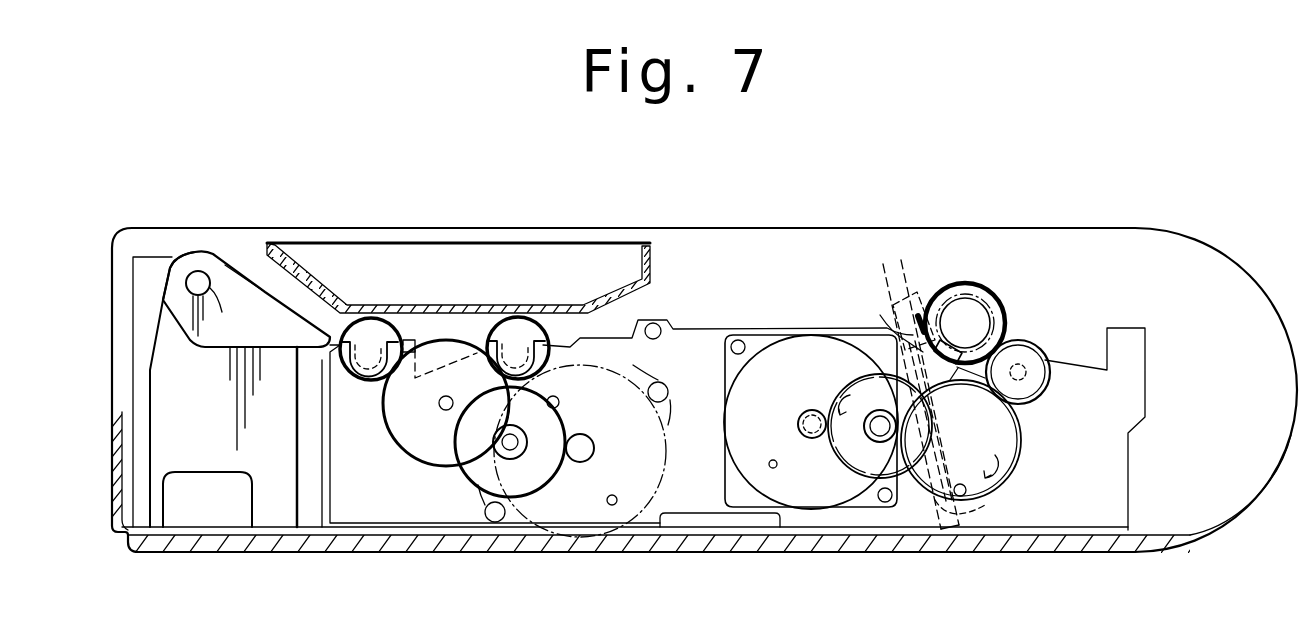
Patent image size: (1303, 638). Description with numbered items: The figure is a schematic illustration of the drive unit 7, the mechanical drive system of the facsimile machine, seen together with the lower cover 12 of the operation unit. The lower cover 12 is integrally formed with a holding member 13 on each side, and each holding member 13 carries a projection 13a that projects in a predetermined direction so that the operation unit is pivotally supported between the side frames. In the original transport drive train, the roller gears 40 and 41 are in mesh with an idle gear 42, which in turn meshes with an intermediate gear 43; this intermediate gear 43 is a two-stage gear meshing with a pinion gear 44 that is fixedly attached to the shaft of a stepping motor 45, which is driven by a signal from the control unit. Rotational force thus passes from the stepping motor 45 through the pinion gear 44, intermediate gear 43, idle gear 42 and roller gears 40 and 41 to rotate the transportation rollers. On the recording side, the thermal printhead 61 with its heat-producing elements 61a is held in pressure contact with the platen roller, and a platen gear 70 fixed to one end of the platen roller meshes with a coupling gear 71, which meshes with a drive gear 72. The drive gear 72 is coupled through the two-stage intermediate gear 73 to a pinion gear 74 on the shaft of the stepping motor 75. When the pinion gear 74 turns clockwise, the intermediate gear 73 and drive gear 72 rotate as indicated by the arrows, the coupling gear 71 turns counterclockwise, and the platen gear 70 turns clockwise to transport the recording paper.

The drive unit 7 is at (703, 556).
The lower cover 12 is at (648, 252).
The holding member 13 is at (187, 336).
The projection 13a is at (246, 299).
The roller gear 40 is at (520, 336).
The roller gear 41 is at (372, 336).
The idle gear 42 is at (443, 353).
The intermediate gear 43 is at (478, 470).
The pinion gear 44 is at (598, 448).
The stepping motor 45 is at (656, 477).
The thermal printhead 61 is at (905, 292).
The heat-producing element 61a is at (918, 327).
The platen gear 70 is at (960, 300).
The coupling gear 71 is at (1025, 350).
The drive gear 72 is at (913, 487).
The intermediate gear 73 is at (857, 453).
The pinion gear 74 is at (809, 412).
The stepping motor 75 is at (803, 356).